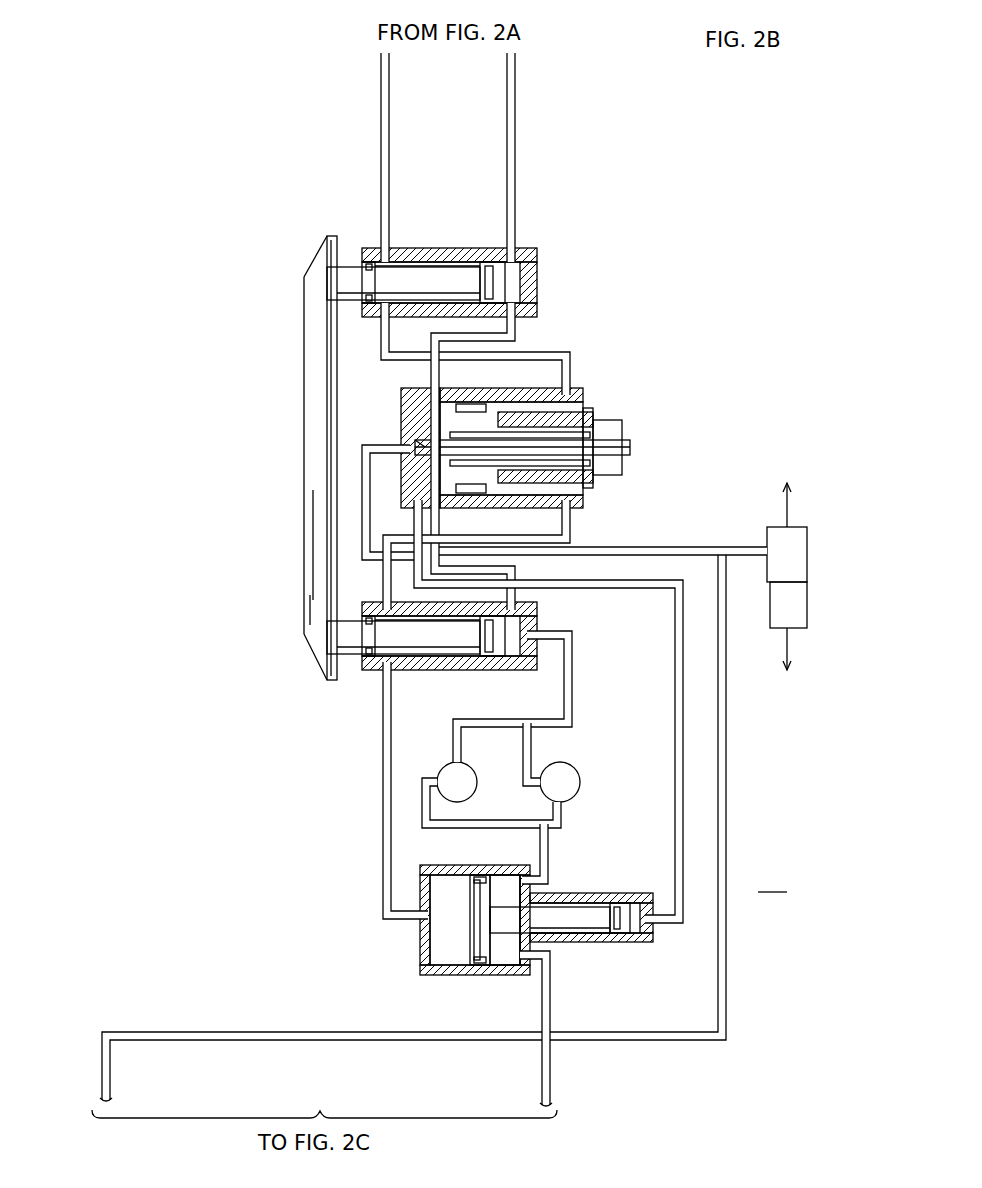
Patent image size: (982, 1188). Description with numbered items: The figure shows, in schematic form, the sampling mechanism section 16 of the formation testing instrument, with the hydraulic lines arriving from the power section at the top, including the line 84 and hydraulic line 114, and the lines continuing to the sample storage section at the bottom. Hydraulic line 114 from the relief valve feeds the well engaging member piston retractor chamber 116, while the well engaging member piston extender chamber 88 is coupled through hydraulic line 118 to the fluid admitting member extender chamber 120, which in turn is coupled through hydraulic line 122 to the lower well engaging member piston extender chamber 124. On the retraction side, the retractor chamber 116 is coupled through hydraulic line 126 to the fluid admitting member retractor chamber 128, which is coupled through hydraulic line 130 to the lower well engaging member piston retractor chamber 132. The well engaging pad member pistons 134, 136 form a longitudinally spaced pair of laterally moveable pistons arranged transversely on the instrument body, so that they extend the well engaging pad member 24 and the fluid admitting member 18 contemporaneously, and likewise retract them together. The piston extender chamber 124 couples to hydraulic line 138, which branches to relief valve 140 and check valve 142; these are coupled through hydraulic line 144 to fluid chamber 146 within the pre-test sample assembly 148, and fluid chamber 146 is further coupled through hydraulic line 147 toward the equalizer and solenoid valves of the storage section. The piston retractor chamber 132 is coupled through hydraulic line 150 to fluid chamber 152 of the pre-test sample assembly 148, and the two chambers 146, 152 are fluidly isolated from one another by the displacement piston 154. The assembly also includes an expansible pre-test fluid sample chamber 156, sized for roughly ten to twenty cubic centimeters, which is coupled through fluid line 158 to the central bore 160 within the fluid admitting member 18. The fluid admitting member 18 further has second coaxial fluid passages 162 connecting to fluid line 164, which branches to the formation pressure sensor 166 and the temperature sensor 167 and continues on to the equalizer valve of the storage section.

The sampling mechanism section 16 is at (772, 880).
The fluid admitting member 18 is at (612, 442).
The well engaging pad member 24 is at (313, 540).
The conduit 84 is at (518, 88).
The well engaging member piston extender chamber 88 is at (537, 276).
The hydraulic line 114 is at (380, 91).
The well engaging member piston retractor chamber 116 is at (400, 264).
The hydraulic line 118 is at (530, 335).
The fluid admitting member extender chamber 120 is at (437, 427).
The hydraulic line 122 is at (517, 571).
The well engaging member piston extender chamber 124 is at (537, 614).
The hydraulic line 126 is at (383, 346).
The fluid admitting member retractor chamber 128 is at (583, 396).
The hydraulic line 130 is at (570, 529).
The well engaging member piston retractor chamber 132 is at (405, 618).
The well engaging pad member piston 134 is at (340, 287).
The well engaging pad member piston 136 is at (352, 634).
The hydraulic line 138 is at (575, 690).
The relief valve 140 is at (580, 783).
The check valve 142 is at (440, 775).
The hydraulic line 144 is at (550, 855).
The fluid chamber 146 is at (515, 968).
The hydraulic line 147 is at (552, 1085).
The pre-test sample assembly 148 is at (630, 938).
The hydraulic line 150 is at (383, 826).
The fluid chamber 152 is at (440, 930).
The displacement piston 154 is at (470, 960).
The pre-test fluid sample chamber 156 is at (615, 893).
The fluid line 158 is at (727, 762).
The central bore 160 is at (600, 452).
The second coaxial fluid passages 162 is at (605, 425).
The fluid line 164 is at (362, 482).
The formation pressure sensor 166 is at (807, 556).
The temperature sensor 167 is at (807, 605).